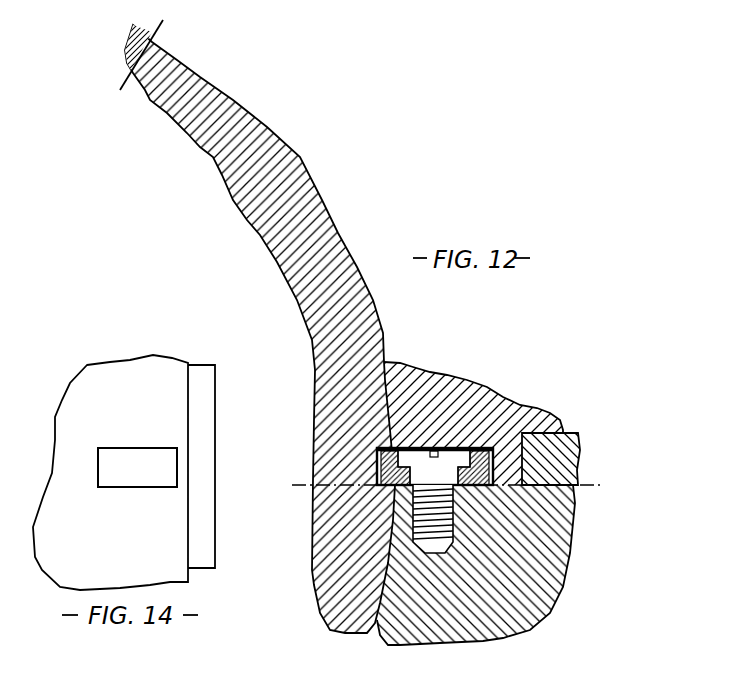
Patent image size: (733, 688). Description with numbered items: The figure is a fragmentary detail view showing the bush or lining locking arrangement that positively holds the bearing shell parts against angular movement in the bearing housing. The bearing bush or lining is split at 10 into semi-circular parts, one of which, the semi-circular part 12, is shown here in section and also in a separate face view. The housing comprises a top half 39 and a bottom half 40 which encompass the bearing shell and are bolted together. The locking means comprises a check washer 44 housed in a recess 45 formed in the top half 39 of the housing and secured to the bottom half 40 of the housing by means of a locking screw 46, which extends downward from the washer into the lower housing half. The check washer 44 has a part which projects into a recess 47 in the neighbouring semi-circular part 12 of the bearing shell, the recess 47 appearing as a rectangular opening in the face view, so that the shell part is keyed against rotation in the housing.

In FIG. 12, the split 10 is at (143, 58).
In FIG. 12, the semi-circular part 12 is at (342, 293).
In FIG. 14, the semi-circular part 12 is at (82, 392).
In FIG. 12, the top half 39 is at (401, 373).
In FIG. 12, the bottom half 40 is at (513, 590).
In FIG. 12, the check washer 44 is at (509, 430).
In FIG. 12, the recess 45 is at (486, 447).
In FIG. 12, the locking screw 46 is at (396, 449).
In FIG. 12, the recess 47 is at (377, 467).
In FIG. 14, the recess 47 is at (135, 448).